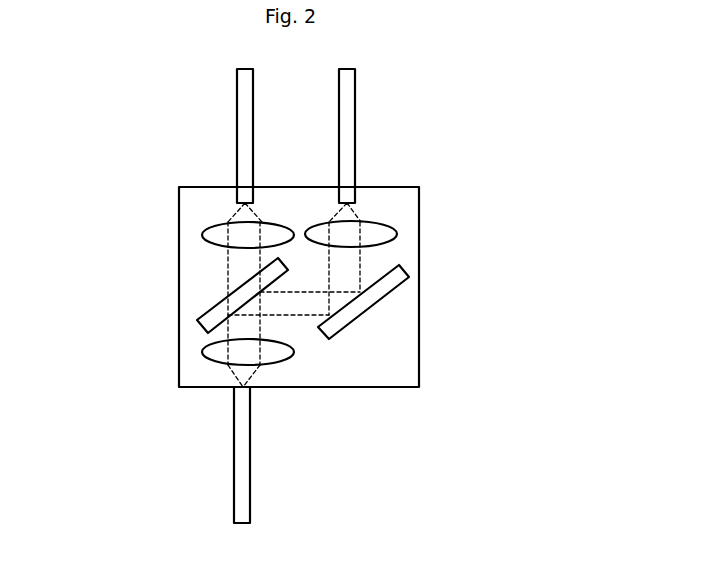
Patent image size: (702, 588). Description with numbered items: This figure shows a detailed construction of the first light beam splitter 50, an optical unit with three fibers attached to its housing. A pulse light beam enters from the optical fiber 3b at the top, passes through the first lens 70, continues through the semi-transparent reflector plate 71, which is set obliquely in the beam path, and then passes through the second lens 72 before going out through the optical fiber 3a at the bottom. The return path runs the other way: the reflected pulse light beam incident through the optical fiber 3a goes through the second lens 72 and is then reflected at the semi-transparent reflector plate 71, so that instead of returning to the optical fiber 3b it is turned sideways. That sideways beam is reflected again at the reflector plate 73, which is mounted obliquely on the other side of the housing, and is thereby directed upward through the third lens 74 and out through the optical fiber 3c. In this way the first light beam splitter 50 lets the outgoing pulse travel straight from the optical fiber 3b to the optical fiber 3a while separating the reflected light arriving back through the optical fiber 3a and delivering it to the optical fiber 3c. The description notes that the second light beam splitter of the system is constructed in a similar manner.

The first light beam splitter 50 is at (164, 154).
The optical fiber 3a is at (234, 433).
The optical fiber 3b is at (237, 131).
The optical fiber 3c is at (355, 138).
The first lens 70 is at (203, 235).
The semi-transparent reflector plate 71 is at (206, 312).
The second lens 72 is at (203, 354).
The reflector plate 73 is at (407, 285).
The third lens 74 is at (396, 236).